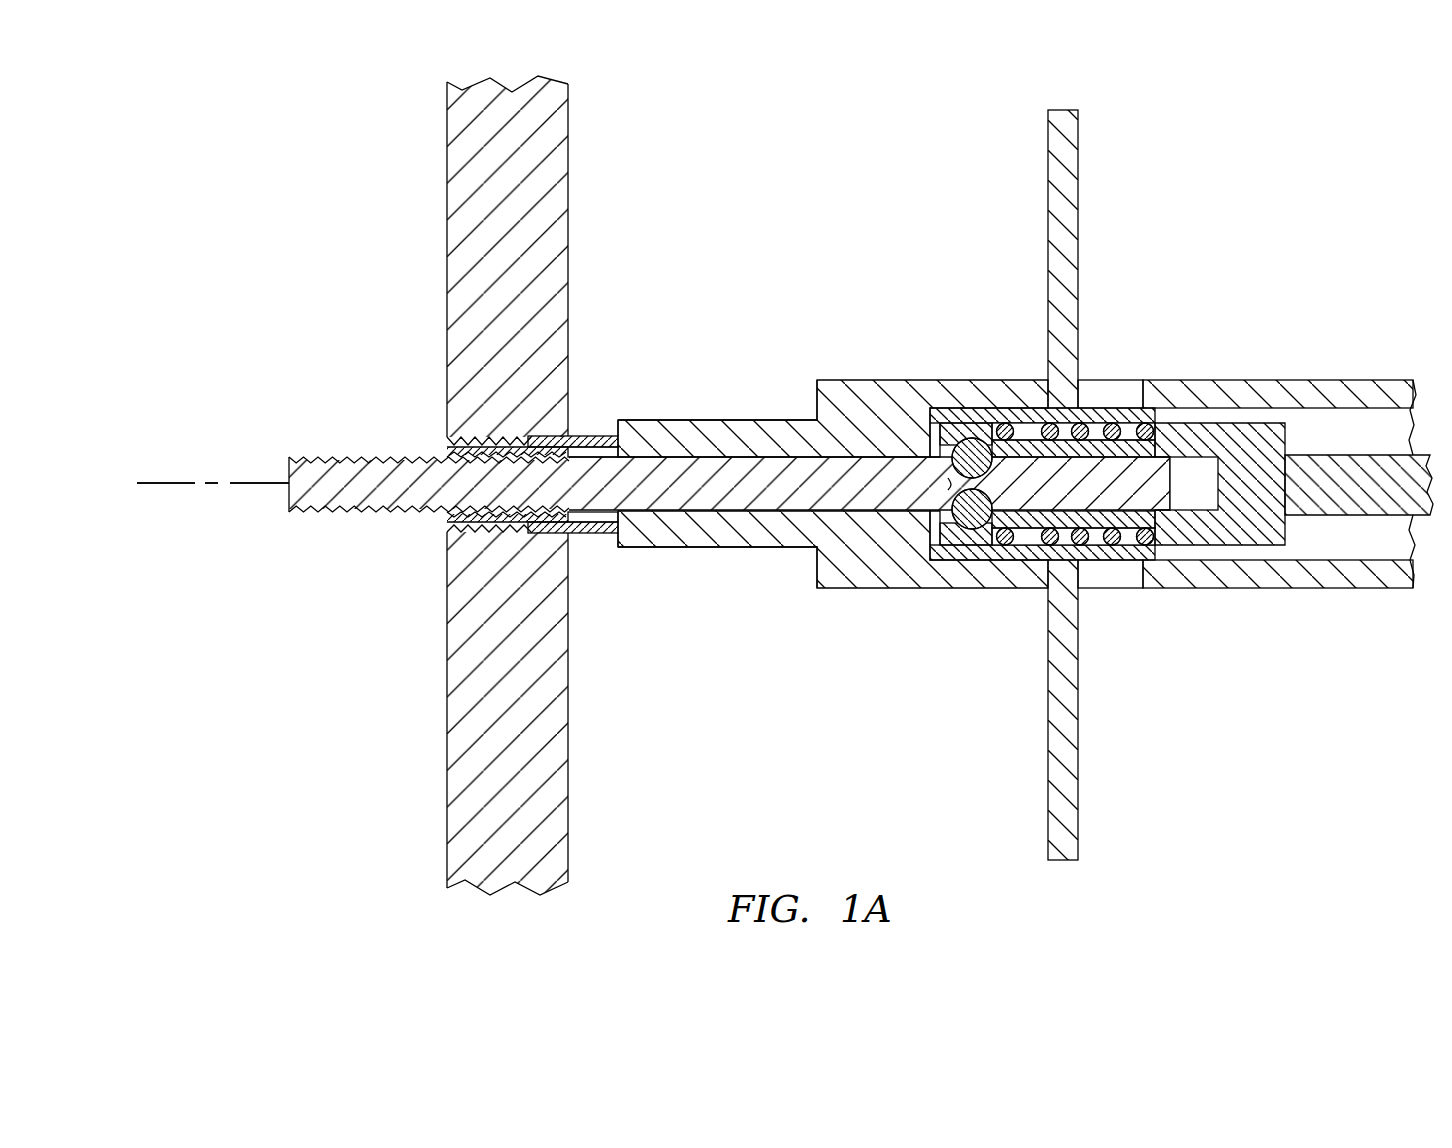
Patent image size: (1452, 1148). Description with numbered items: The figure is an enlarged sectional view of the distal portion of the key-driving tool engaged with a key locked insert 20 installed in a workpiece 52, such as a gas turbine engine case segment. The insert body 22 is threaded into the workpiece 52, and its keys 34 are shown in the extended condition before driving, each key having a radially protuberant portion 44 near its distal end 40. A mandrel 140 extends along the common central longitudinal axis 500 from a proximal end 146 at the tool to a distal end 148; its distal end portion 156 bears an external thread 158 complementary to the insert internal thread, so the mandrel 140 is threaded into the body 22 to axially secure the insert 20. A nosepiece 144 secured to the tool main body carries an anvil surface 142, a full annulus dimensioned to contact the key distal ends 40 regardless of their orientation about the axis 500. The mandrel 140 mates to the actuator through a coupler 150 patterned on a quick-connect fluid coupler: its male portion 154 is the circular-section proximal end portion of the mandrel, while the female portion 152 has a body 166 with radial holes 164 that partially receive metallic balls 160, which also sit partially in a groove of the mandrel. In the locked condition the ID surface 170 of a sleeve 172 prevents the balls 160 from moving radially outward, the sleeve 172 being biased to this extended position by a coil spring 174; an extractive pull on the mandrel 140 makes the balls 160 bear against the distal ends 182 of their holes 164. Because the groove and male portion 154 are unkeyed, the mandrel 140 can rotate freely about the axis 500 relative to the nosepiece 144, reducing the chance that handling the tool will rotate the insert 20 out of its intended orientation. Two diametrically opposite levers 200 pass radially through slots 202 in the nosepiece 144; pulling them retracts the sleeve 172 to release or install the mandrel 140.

The key locked insert 20 is at (533, 437).
The body 22 is at (490, 522).
The keys 34 is at (590, 551).
The distal end 40 is at (637, 437).
The radially protuberant portion 44 is at (598, 437).
The workpiece 52 is at (592, 191).
The mandrel 140 is at (840, 478).
The anvil surface 142 is at (600, 535).
The nosepiece 144 is at (750, 432).
The proximal end 146 is at (1170, 477).
The distal end 148 is at (289, 462).
The coupler 150 is at (1151, 402).
The female portion 152 is at (1200, 527).
The male portion 154 is at (1168, 513).
The distal end portion 156 is at (428, 506).
The external thread 158 is at (388, 457).
The balls 160 is at (975, 529).
The radial holes 164 is at (990, 441).
The body 166 is at (1036, 519).
The ID surface 170 is at (947, 482).
The sleeve 172 is at (1090, 415).
The spring 174 is at (1120, 547).
The distal ends 182 is at (958, 440).
The levers 200 is at (1065, 144).
The slots 202 is at (1100, 580).
The central longitudinal axis 500 is at (158, 483).